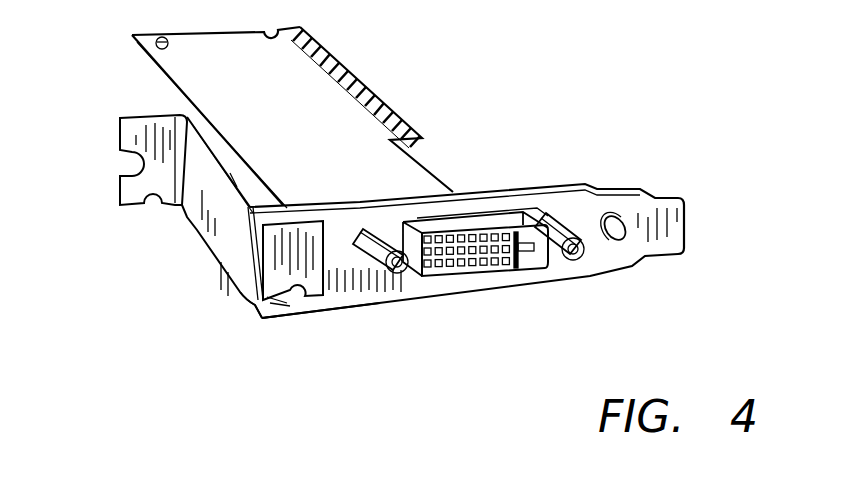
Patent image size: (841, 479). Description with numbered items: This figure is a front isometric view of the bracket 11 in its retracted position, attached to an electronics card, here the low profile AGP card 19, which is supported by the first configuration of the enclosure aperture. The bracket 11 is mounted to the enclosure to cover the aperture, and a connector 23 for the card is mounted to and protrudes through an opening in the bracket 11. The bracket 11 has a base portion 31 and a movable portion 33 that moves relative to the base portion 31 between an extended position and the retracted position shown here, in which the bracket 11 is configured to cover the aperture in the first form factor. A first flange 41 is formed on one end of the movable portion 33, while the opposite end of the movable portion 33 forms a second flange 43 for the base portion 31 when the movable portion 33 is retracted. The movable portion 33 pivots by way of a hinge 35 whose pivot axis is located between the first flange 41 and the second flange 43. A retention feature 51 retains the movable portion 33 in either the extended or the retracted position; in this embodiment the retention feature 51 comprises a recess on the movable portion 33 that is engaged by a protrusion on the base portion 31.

The bracket 11 is at (99, 330).
The low profile AGP card 19 is at (406, 118).
The connector 23 is at (467, 277).
The base portion 31 is at (607, 260).
The movable portion 33 is at (198, 233).
The hinge 35 is at (277, 285).
The first flange 41 is at (125, 190).
The second flange 43 is at (253, 303).
The retention feature 51 is at (318, 314).